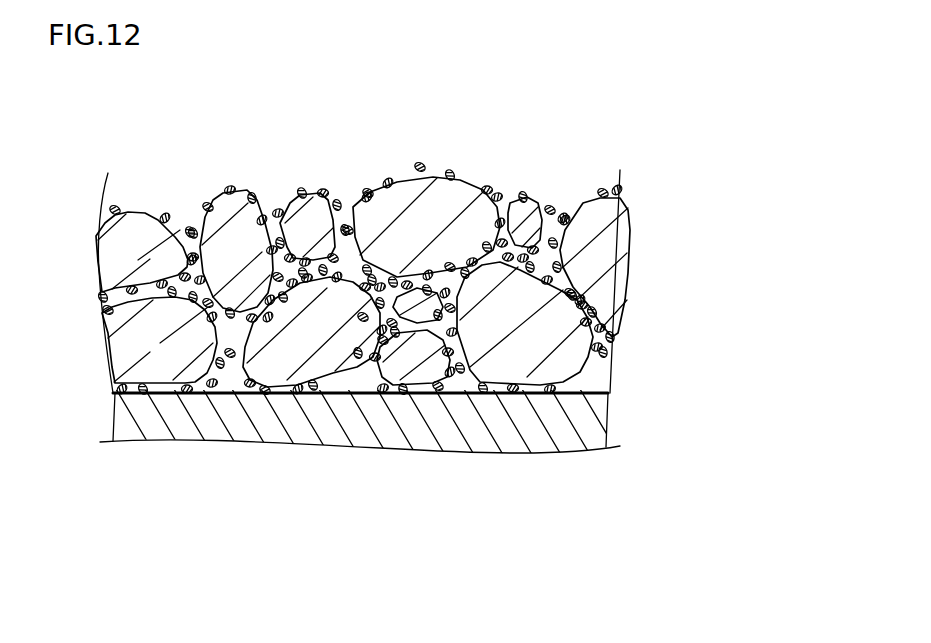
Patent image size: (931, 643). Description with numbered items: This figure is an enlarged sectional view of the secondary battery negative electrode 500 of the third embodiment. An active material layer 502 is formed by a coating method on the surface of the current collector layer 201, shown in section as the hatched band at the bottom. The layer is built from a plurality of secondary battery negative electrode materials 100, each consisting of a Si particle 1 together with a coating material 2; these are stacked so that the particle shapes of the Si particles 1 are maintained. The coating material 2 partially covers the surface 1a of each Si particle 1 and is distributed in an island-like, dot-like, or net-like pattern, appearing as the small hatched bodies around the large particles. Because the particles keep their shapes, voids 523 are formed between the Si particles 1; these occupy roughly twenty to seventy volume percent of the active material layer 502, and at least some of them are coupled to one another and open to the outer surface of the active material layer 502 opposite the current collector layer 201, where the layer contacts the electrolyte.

The Si particle 1 is at (145, 223).
The surface of Si particle 1a is at (410, 178).
The coating material 2 is at (206, 205).
The secondary battery negative electrode material 100 is at (242, 130).
The void 523 is at (508, 213).
The secondary battery negative electrode 500 is at (681, 154).
The active material layer 502 is at (635, 186).
The current collector layer 201 is at (577, 417).